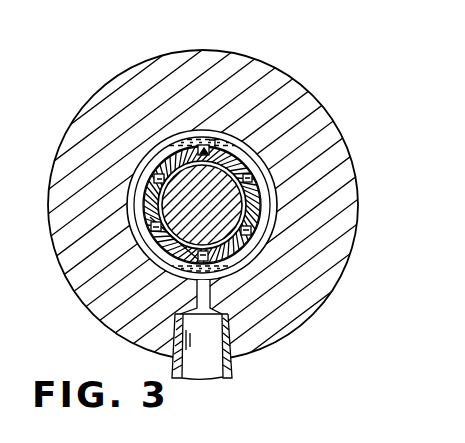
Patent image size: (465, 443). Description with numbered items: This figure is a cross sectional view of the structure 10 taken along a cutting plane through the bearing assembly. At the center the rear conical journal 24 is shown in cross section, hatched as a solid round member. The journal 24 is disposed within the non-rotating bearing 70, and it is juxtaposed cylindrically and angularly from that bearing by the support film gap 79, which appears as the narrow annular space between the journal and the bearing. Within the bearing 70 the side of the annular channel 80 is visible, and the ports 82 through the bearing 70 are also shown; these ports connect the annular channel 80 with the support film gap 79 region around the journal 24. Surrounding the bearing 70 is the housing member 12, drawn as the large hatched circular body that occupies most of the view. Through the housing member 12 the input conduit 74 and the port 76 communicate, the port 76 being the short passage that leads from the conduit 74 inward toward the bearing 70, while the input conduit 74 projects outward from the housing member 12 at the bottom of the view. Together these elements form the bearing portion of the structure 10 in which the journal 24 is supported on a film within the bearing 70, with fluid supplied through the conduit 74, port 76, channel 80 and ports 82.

The rotary indicator assembly 10 is at (112, 58).
The housing member 12 is at (268, 61).
The rear conical journal 24 is at (217, 205).
The non-rotating bearing 70 is at (238, 140).
The input conduit 74 is at (234, 362).
The port 76 is at (197, 288).
The support film gap 79 is at (180, 160).
The annular channel 80 is at (212, 146).
The ports 82 is at (204, 149).